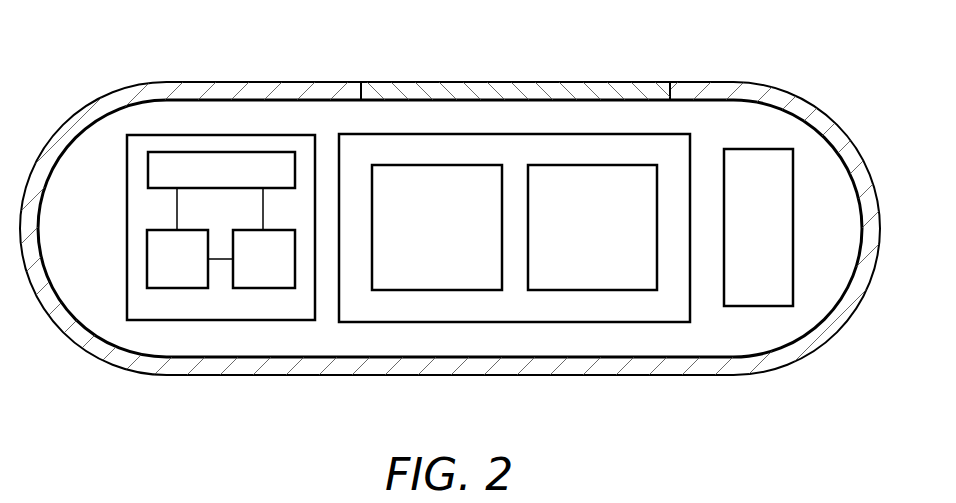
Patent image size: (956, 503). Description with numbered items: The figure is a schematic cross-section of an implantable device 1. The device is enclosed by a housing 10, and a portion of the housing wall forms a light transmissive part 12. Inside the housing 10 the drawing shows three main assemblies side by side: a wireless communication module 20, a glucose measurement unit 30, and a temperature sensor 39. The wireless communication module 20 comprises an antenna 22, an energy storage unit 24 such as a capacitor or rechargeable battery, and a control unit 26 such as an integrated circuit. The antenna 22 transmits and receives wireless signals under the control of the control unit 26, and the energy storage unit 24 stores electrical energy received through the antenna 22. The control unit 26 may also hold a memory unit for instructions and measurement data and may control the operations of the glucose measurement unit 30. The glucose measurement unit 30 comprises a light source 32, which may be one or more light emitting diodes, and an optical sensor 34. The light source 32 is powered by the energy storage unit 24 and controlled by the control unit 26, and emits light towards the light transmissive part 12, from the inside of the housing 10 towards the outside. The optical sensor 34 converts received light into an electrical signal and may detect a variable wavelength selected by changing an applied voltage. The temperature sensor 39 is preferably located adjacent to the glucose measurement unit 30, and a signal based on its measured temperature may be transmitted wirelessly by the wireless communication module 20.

The implantable device 1 is at (810, 60).
The housing 10 is at (77, 345).
The light transmissive part 12 is at (513, 88).
The wireless communication module 20 is at (127, 207).
The antenna 22 is at (221, 160).
The energy storage unit 24 is at (178, 272).
The control unit 26 is at (265, 272).
The glucose measurement unit 30 is at (515, 322).
The light source 32 is at (436, 272).
The optical sensor 34 is at (597, 272).
The temperature sensor 39 is at (757, 288).